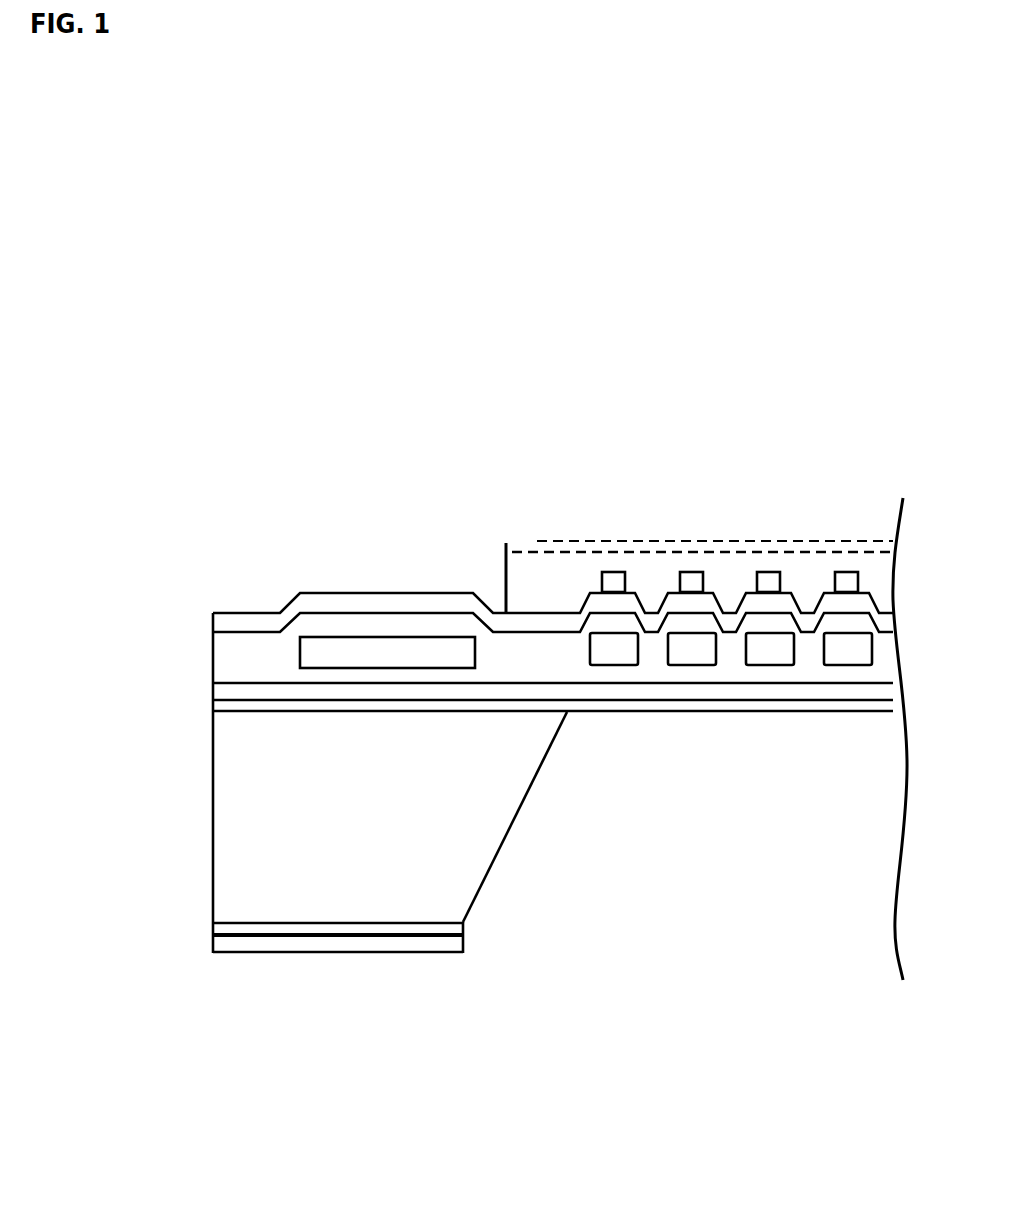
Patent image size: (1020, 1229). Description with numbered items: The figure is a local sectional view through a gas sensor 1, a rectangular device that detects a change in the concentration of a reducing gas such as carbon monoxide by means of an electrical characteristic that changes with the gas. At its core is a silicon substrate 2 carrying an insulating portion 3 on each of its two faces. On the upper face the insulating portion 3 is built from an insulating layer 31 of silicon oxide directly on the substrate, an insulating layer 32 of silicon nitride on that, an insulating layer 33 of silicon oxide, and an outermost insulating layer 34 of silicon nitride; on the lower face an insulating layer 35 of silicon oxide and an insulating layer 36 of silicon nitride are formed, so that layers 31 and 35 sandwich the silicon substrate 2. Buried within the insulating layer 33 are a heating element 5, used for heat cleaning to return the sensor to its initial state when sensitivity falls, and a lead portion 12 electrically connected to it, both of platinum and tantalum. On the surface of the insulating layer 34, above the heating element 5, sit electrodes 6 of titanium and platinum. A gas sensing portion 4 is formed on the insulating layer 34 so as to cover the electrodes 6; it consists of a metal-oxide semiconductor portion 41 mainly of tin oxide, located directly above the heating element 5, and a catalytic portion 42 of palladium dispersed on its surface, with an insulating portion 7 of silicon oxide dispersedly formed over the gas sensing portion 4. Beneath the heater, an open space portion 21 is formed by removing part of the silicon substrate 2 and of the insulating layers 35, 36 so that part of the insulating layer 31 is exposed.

The gas sensor 1 is at (862, 271).
The silicon substrate 2 is at (225, 808).
The open space portion 21 is at (670, 959).
The insulating portion 3 is at (110, 602).
The insulating layer 31 is at (212, 705).
The insulating layer 32 is at (212, 692).
The insulating layer 33 is at (212, 655).
The insulating layer 34 is at (212, 622).
The insulating layer 35 is at (223, 929).
The insulating layer 36 is at (223, 943).
The lead portion 12 is at (392, 653).
The heating element 5 is at (615, 655).
The electrode 6 is at (843, 585).
The gas sensing portion 4 is at (434, 507).
The metal-oxide semiconductor portion 41 is at (518, 578).
The catalytic portion 42 is at (512, 552).
The insulating portion 7 is at (537, 541).